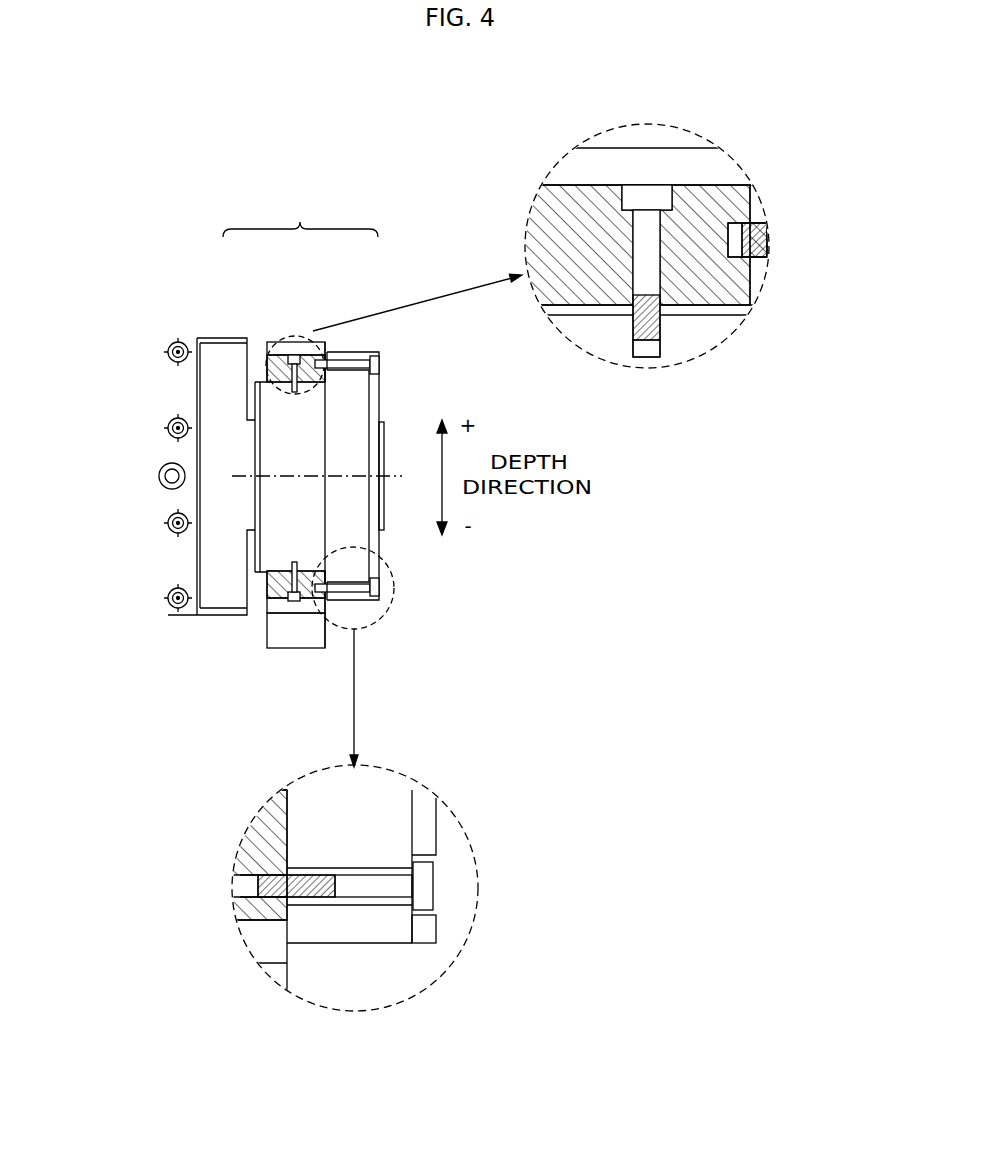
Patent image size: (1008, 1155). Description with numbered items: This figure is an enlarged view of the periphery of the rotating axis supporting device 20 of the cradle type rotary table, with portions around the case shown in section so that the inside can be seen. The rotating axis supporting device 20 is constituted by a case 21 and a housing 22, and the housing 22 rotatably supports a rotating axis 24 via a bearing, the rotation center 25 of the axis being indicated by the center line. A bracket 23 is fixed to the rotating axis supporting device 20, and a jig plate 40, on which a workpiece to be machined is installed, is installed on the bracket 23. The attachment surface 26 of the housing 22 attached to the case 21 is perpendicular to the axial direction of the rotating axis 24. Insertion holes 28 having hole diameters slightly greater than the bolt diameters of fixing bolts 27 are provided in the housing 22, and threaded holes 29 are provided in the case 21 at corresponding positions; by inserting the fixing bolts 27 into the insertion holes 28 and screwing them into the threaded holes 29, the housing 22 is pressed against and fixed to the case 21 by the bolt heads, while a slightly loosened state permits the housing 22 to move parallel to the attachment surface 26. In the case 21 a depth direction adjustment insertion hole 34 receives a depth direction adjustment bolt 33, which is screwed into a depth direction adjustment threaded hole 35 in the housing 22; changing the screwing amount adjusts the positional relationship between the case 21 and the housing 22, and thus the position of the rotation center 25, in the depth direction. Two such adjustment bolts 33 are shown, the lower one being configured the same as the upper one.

The rotating axis supporting device 20 is at (300, 209).
The case 21 is at (265, 647).
The housing 22 is at (370, 385).
The bracket 23 is at (218, 375).
The rotating axis 24 is at (382, 427).
The rotation center 25 is at (390, 476).
The attachment surface 26 is at (350, 352).
The fixing bolt 27 is at (383, 600).
The insertion hole 28 is at (390, 900).
The threaded hole 29 is at (260, 877).
The depth direction adjustment bolt 33 is at (292, 346).
The depth direction adjustment insertion hole 34 is at (630, 290).
The depth direction adjustment threaded hole 35 is at (653, 358).
The jig plate 40 is at (160, 445).